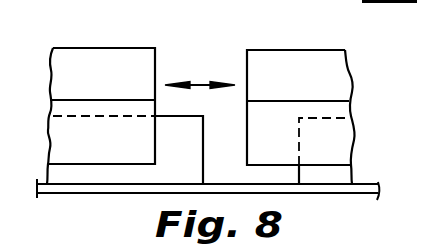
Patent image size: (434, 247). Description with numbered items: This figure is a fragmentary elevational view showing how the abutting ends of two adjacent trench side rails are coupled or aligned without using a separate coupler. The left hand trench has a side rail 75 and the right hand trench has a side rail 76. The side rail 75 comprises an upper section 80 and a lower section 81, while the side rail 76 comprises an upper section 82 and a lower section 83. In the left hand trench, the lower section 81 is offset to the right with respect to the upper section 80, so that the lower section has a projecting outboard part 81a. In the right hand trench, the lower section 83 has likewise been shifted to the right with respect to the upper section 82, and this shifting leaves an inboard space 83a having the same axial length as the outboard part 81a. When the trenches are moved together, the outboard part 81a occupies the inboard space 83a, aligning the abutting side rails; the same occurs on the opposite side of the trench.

The side rail 75 is at (45, 72).
The side rail 76 is at (358, 78).
The upper section 80 is at (75, 140).
The lower section 81 is at (100, 174).
The outboard part 81a is at (190, 168).
The upper section 82 is at (323, 108).
The lower section 83 is at (330, 178).
The inboard space 83a is at (275, 173).